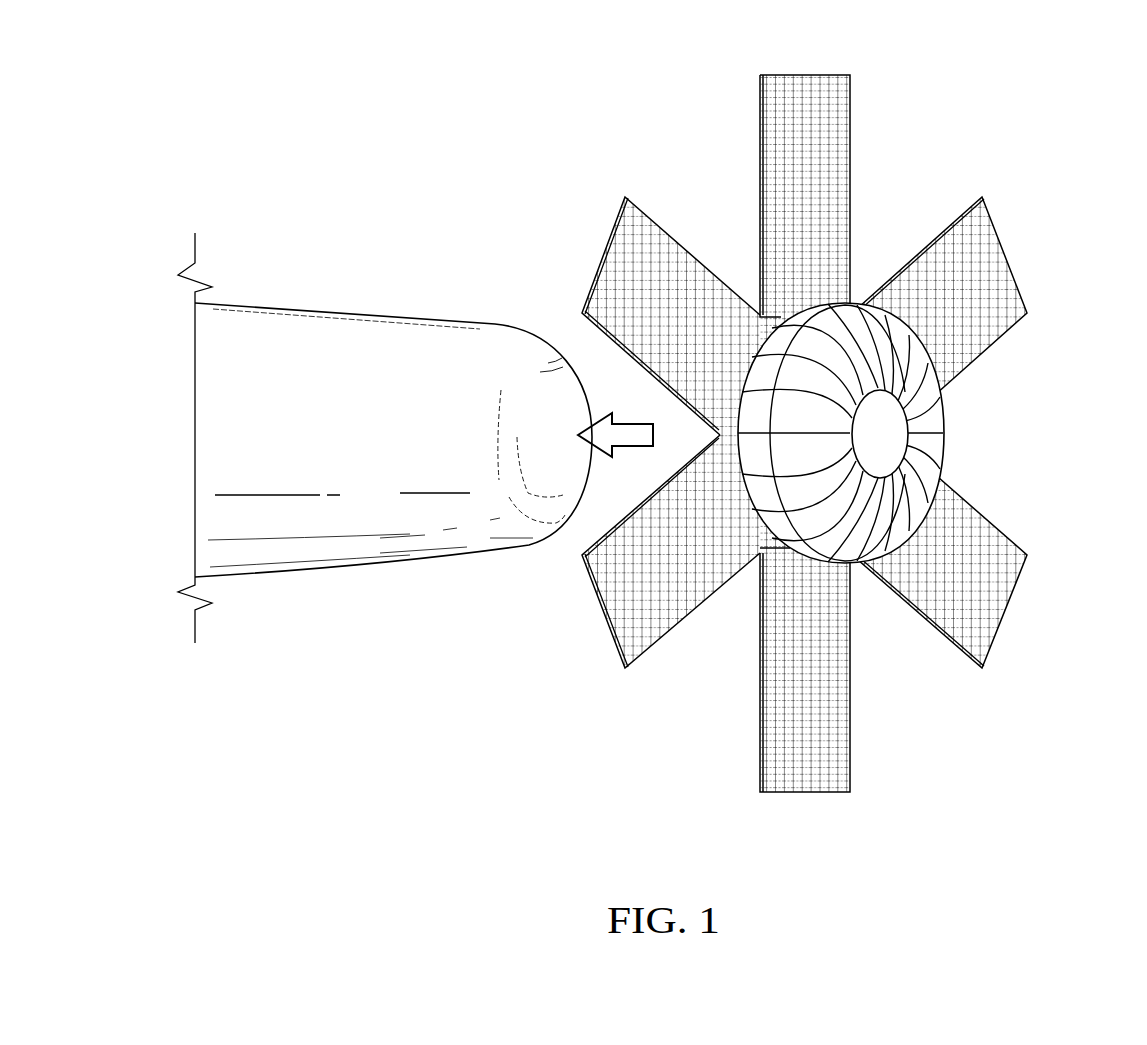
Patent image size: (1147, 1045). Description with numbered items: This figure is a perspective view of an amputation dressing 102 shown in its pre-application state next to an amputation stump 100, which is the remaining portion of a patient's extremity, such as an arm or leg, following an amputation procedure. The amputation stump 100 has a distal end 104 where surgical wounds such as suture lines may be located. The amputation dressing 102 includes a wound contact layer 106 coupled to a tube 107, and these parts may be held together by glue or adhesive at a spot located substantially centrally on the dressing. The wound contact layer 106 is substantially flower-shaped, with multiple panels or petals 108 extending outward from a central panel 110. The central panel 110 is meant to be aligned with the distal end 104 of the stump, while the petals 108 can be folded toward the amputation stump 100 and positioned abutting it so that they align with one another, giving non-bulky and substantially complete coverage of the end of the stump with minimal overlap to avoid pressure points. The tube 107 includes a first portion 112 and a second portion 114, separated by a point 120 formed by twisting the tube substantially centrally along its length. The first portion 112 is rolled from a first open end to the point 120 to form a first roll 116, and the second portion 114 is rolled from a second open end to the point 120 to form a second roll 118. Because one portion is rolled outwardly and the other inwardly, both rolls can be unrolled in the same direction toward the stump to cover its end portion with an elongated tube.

The amputation stump 100 is at (333, 322).
The amputation dressing 102 is at (834, 436).
The distal end 104 is at (562, 368).
The wound contact layer 106 is at (545, 583).
The tube 107 is at (868, 260).
The petals 108 is at (815, 95).
The central panel 110 is at (869, 592).
The first portion 112 is at (742, 268).
The second portion 114 is at (913, 479).
The first roll 116 is at (798, 548).
The second roll 118 is at (933, 457).
The point 120 is at (890, 433).